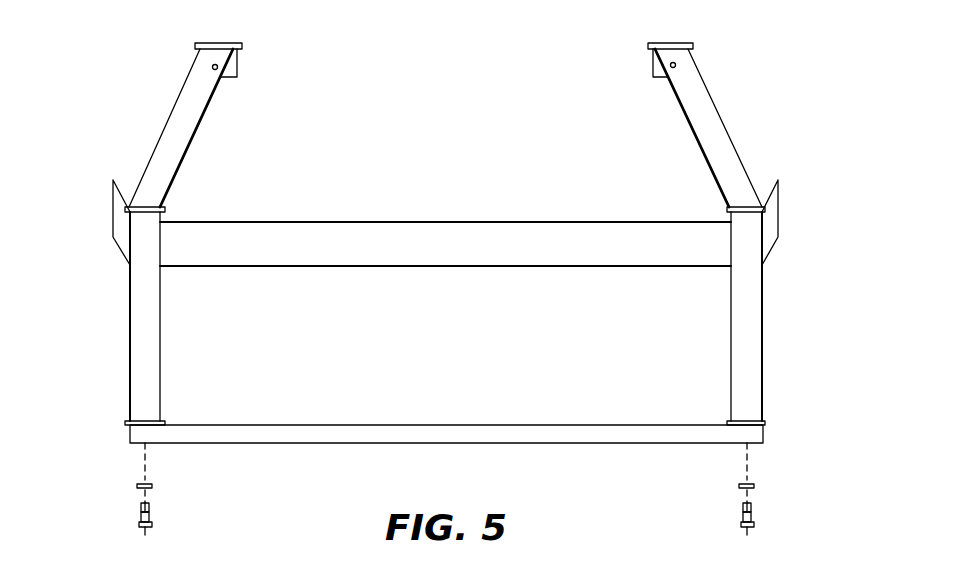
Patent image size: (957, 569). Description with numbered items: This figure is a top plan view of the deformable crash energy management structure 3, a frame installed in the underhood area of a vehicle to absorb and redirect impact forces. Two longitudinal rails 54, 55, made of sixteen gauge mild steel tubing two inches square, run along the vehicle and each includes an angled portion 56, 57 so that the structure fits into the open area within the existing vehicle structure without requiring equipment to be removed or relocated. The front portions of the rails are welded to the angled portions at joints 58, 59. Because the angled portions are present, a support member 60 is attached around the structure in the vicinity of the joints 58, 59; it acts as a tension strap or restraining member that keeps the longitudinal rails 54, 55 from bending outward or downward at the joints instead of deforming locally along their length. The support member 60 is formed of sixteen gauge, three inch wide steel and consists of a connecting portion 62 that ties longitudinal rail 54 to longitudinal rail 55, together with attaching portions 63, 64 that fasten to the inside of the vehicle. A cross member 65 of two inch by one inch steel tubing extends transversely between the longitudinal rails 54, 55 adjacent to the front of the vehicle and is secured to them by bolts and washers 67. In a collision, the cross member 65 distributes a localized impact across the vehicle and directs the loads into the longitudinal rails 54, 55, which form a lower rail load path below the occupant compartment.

The deformable crash energy management structure 3 is at (472, 53).
The longitudinal rail 54 is at (163, 343).
The longitudinal rail 55 is at (762, 320).
The angled portion 56 is at (178, 167).
The angled portion 57 is at (700, 145).
The joint 58 is at (163, 210).
The joint 59 is at (730, 207).
The support member 60 is at (457, 267).
The connecting portion 62 is at (370, 222).
The attaching portion 63 is at (120, 245).
The attaching portion 64 is at (772, 245).
The cross member 65 is at (445, 443).
The bolts and washers 67 is at (150, 510).